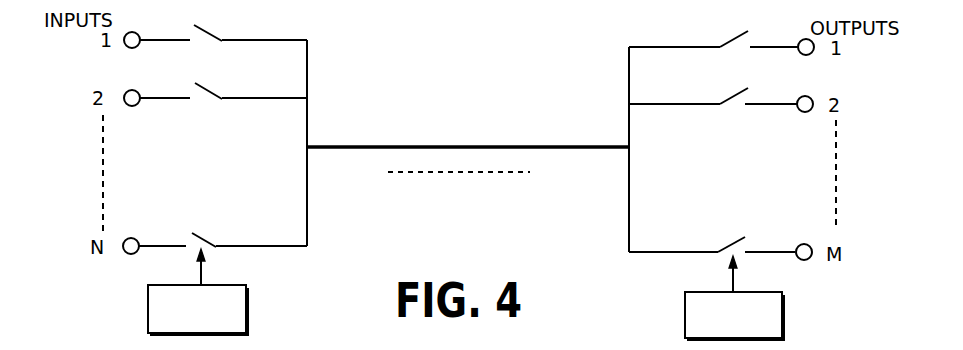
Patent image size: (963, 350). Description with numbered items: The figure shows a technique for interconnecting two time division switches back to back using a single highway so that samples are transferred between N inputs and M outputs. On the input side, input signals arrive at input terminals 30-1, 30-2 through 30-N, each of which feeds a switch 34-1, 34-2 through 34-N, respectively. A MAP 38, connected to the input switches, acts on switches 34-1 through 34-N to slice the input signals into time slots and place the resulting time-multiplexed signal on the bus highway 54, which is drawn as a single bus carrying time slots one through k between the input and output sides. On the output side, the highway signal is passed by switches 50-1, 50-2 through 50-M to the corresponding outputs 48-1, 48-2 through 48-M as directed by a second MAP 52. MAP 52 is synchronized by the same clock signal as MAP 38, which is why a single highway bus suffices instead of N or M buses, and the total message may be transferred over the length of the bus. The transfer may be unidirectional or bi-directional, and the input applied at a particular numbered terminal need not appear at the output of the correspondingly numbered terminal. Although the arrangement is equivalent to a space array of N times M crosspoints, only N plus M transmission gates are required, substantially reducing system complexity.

The input terminal 30-1 is at (135, 31).
The input terminal 30-2 is at (135, 89).
The input terminal 30-N is at (131, 238).
The switch 34-1 is at (210, 28).
The switch 34-2 is at (251, 81).
The switch 34-N is at (200, 231).
The MAP 38 is at (148, 314).
The bus highway 54 is at (565, 148).
The switch 50-1 is at (736, 37).
The switch 50-2 is at (726, 100).
The switch 50-M is at (732, 240).
The output 48-1 is at (803, 40).
The output 48-2 is at (802, 96).
The output 48-M is at (800, 259).
The MAP 52 is at (783, 318).